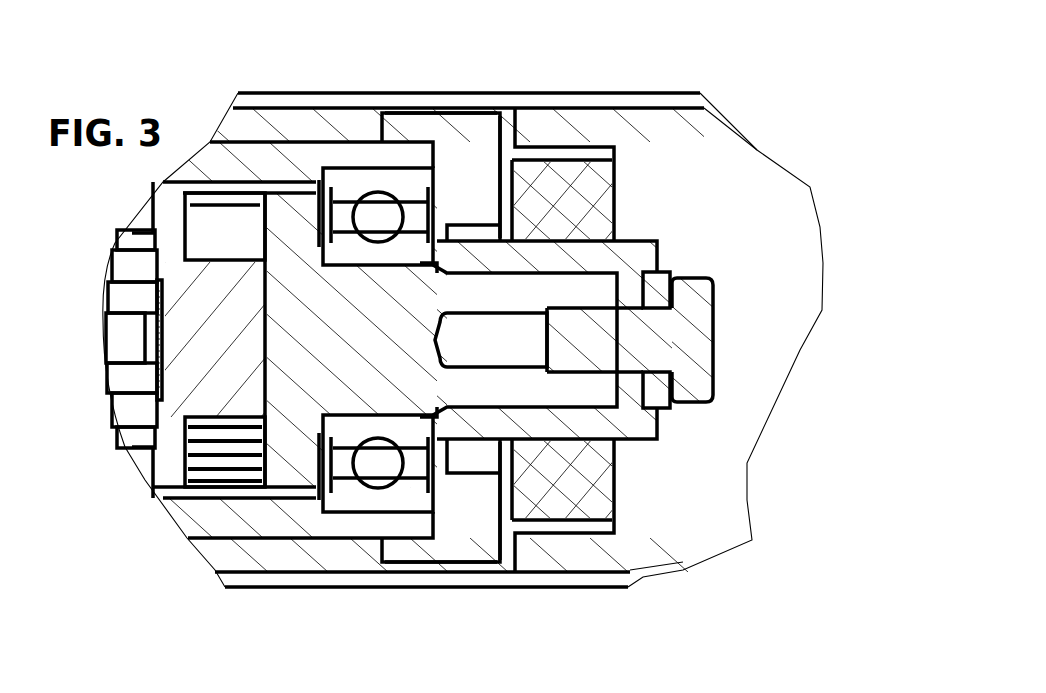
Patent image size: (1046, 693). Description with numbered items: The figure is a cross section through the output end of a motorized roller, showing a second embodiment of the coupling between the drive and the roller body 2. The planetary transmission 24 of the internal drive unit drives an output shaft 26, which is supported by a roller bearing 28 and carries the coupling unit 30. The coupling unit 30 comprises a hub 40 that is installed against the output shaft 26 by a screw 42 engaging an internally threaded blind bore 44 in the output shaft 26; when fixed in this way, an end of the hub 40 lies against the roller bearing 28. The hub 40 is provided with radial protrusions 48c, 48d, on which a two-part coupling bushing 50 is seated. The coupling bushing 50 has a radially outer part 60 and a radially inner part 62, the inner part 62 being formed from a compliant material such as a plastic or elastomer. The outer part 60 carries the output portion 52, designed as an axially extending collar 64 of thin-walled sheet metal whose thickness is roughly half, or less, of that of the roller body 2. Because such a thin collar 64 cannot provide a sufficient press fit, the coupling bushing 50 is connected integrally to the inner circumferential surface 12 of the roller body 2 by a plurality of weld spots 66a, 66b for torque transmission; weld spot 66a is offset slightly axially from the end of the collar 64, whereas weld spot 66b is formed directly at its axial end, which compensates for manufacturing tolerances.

The roller body 2 is at (272, 104).
The inner circumferential surface 12 is at (247, 113).
The planetary transmission 24 is at (180, 390).
The output shaft 26 is at (297, 390).
The roller bearing 28 is at (352, 190).
The coupling unit 30 is at (634, 76).
The hub 40 is at (633, 420).
The screw 42 is at (688, 345).
The blind bore 44 is at (470, 350).
The radial protrusion 48c is at (477, 233).
The radial protrusion 48d is at (486, 462).
The coupling bushing 50 is at (565, 155).
The output portion 52 is at (480, 122).
The radially outer part 60 is at (505, 130).
The radially inner part 62 is at (583, 215).
The collar 64 is at (442, 118).
The weld spot 66a is at (402, 116).
The weld spot 66b is at (375, 566).